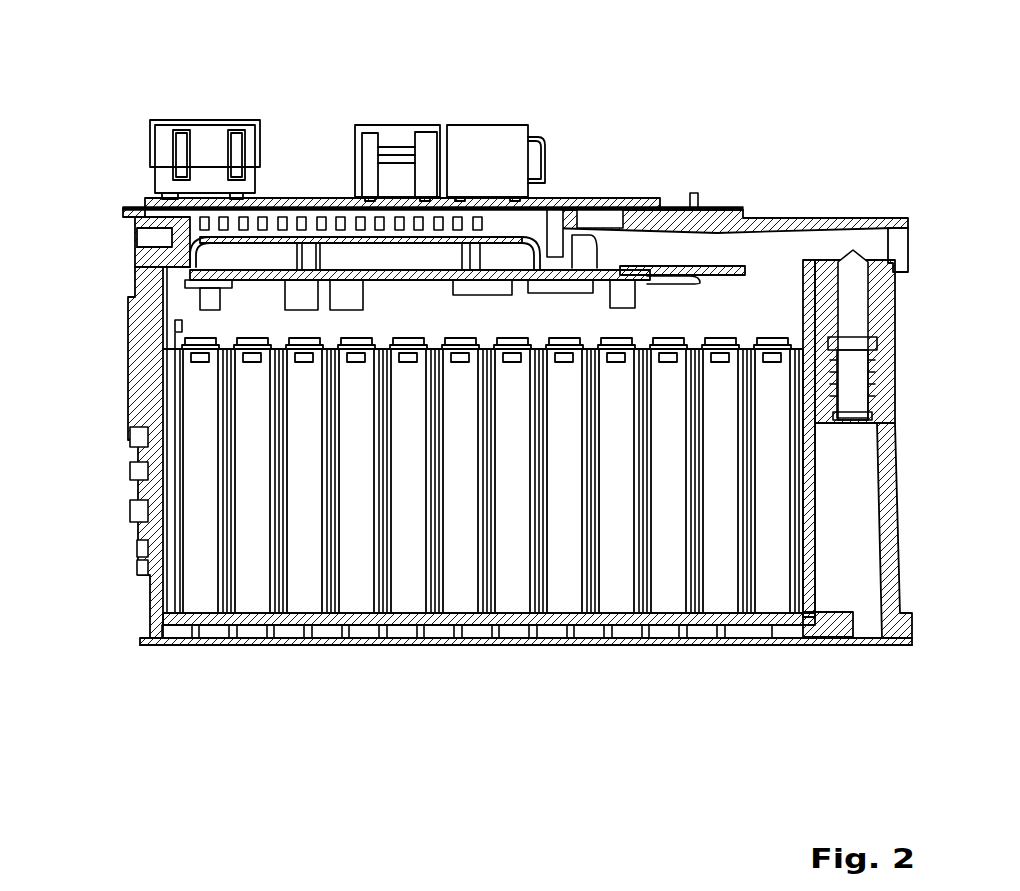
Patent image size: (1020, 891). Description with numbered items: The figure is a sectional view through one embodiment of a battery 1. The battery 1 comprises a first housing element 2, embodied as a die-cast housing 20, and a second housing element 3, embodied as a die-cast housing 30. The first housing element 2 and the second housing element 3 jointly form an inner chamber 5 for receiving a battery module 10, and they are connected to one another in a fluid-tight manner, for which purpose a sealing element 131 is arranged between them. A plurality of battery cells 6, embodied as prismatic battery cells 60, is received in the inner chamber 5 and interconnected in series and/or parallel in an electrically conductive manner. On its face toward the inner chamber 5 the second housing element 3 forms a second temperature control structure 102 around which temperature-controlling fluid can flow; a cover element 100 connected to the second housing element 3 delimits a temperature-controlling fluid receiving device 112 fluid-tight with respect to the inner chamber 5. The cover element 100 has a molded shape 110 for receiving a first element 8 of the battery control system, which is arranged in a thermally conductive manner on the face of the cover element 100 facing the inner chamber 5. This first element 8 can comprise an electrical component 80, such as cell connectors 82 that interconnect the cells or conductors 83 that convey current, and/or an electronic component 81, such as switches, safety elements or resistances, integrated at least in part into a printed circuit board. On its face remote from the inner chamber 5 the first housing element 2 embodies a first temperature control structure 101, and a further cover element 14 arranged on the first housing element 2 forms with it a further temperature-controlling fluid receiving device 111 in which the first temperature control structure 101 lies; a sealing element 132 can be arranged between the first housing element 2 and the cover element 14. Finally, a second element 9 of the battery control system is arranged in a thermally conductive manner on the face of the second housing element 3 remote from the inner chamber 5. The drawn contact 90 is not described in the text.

The battery 1 is at (820, 127).
The first housing element 2 is at (478, 524).
The die-cast housing 20 is at (177, 625).
The second housing element 3 is at (99, 452).
The die-cast housing 30 is at (133, 368).
The inner chamber 5 is at (425, 533).
The battery cells 6 is at (513, 538).
The prismatic battery cells 60 is at (445, 535).
The first element of the battery control system 8 is at (377, 288).
The second element of the battery control system 9 is at (465, 177).
The battery module 10 is at (227, 471).
The cover element 14 is at (698, 647).
The electrical component 80 is at (727, 209).
The cell connectors 82 is at (727, 209).
The conductors 83 is at (578, 293).
The electronic component 81 is at (483, 287).
The connector contact 90 is at (477, 287).
The cover element 100 is at (418, 238).
The first temperature control structure 101 is at (718, 652).
The second temperature control structure 102 is at (318, 225).
The molded shape 110 is at (293, 225).
The further temperature-controlling fluid receiving device 111 is at (668, 655).
The temperature-controlling fluid receiving device 112 is at (383, 243).
The sealing element 131 is at (850, 388).
The sealing element 132 is at (900, 643).